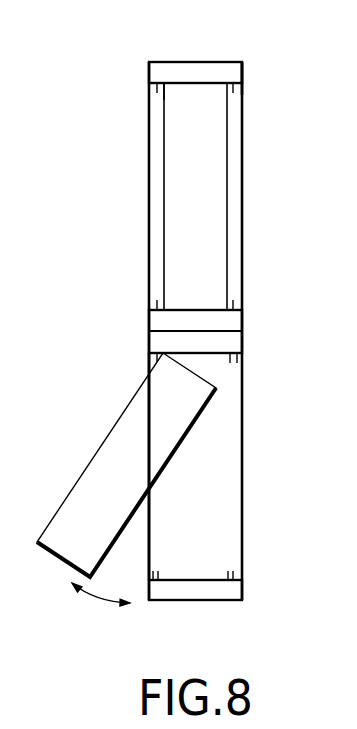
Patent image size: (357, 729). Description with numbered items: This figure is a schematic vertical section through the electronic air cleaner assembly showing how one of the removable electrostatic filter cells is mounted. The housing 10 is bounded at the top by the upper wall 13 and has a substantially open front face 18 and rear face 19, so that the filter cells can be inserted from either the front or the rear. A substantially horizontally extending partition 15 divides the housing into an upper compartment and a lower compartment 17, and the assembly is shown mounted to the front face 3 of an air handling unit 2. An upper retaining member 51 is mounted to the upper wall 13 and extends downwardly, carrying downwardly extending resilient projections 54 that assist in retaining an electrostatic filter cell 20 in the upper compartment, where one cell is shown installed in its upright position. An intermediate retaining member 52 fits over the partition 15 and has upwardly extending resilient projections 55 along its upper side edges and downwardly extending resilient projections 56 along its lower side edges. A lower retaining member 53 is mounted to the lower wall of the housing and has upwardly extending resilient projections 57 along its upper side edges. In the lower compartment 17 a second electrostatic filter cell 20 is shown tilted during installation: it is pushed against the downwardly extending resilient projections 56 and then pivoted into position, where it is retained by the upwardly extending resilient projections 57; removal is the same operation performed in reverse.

The housing 10 is at (138, 63).
The upper wall 13 is at (192, 62).
The upper retaining member 51 is at (254, 69).
The downwardly extending resilient projections 54 is at (160, 85).
The front face 18 is at (150, 168).
The electrostatic filter cell 20 is at (180, 205).
The upwardly extending resilient projections 55 is at (232, 300).
The air handling unit 2 is at (230, 322).
The intermediate retaining member 52 is at (140, 303).
The partition 15 is at (167, 332).
The downwardly extending resilient projections 56 is at (235, 363).
The rear face 19 is at (243, 425).
The lower compartment 17 is at (210, 480).
The upwardly extending resilient projections 57 is at (233, 576).
The front face 3 is at (224, 588).
The lower retaining member 53 is at (141, 604).